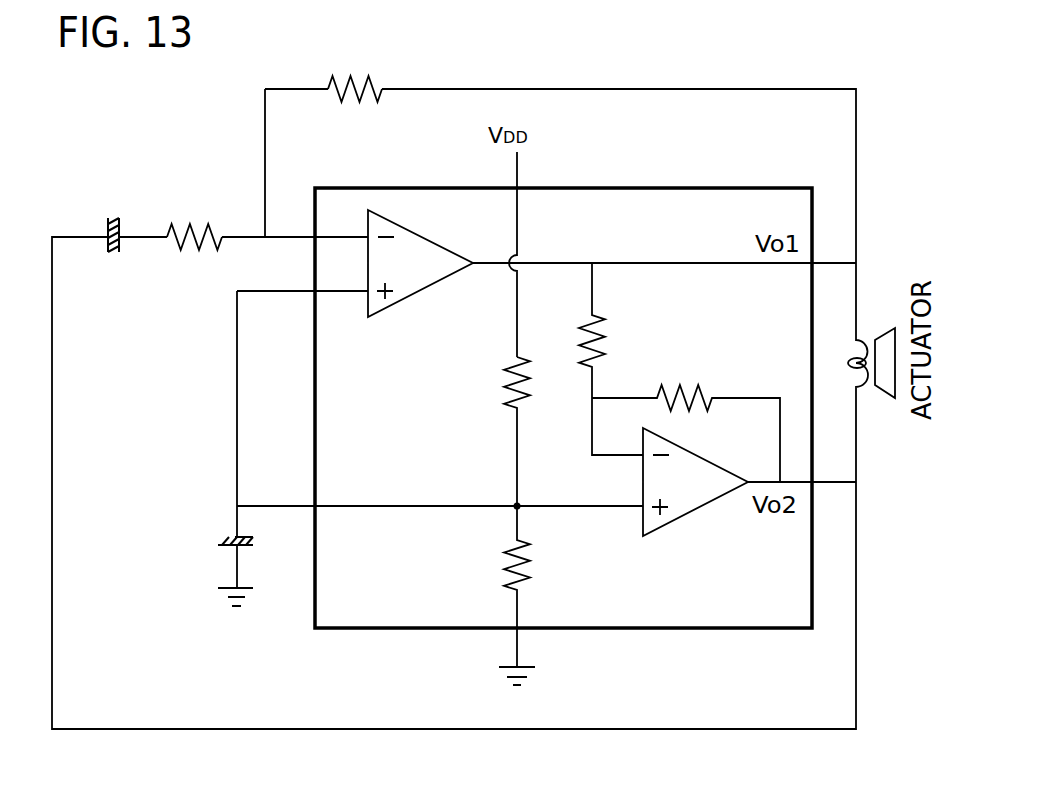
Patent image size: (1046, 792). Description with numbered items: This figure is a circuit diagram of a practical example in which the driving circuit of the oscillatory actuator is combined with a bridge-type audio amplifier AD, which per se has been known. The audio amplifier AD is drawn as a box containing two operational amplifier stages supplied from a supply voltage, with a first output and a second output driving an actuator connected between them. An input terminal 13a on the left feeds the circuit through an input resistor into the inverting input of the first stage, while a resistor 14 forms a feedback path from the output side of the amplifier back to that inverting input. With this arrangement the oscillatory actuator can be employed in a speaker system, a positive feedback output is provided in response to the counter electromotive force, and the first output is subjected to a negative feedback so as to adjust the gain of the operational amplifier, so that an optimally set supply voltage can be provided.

The resistor 14 is at (383, 75).
The input terminal 13a is at (85, 237).
The bridge-type audio amplifier AD is at (676, 188).